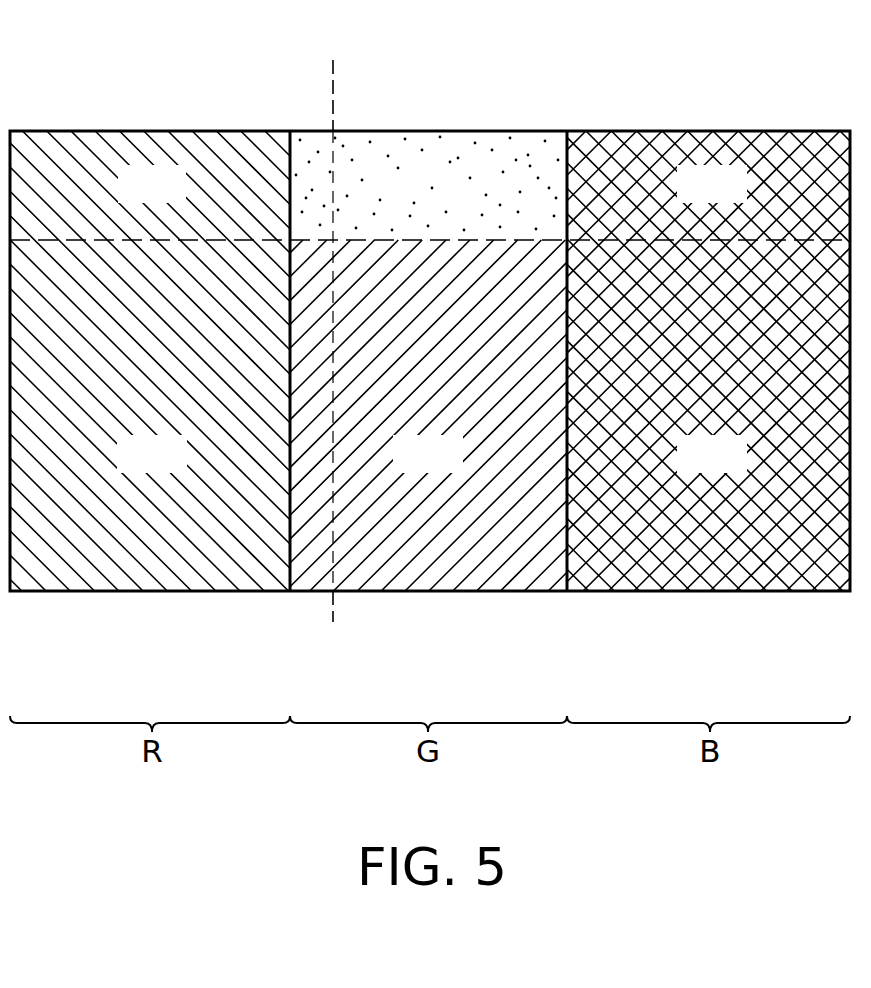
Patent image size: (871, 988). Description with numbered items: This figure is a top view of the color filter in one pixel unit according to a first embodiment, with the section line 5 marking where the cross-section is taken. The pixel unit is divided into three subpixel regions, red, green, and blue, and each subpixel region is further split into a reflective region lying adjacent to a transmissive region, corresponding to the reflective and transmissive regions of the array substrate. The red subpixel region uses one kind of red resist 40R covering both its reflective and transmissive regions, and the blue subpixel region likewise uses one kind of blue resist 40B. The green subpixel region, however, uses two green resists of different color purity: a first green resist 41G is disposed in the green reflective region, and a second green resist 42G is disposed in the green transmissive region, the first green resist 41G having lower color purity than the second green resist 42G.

The red resist 40R is at (134, 160).
The first green resist 41G is at (499, 160).
The second green resist 42G is at (496, 540).
The blue resist 40B is at (707, 160).
The section line 5- 5 is at (333, 55).